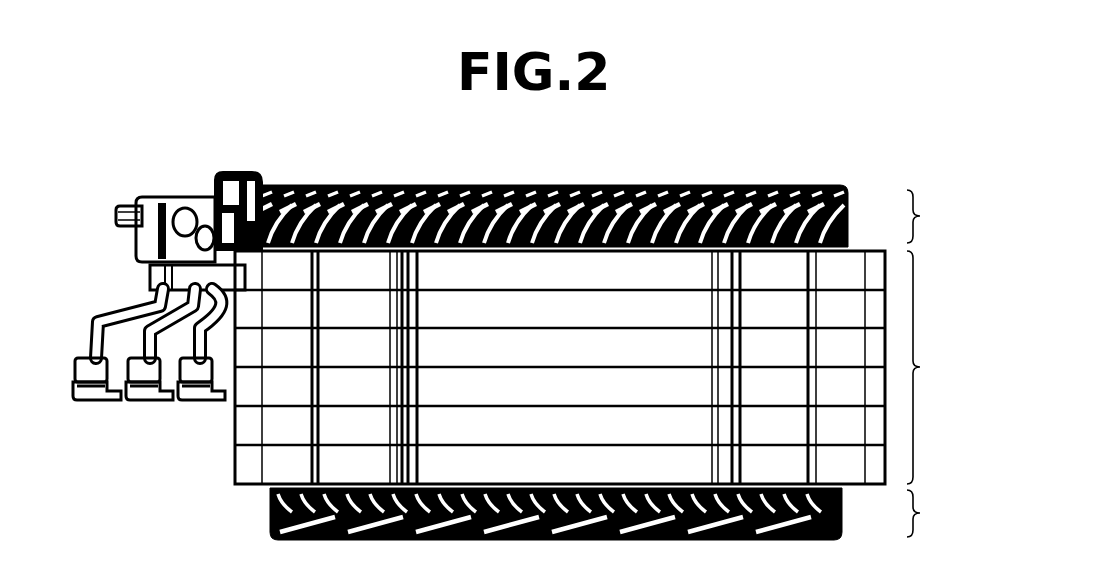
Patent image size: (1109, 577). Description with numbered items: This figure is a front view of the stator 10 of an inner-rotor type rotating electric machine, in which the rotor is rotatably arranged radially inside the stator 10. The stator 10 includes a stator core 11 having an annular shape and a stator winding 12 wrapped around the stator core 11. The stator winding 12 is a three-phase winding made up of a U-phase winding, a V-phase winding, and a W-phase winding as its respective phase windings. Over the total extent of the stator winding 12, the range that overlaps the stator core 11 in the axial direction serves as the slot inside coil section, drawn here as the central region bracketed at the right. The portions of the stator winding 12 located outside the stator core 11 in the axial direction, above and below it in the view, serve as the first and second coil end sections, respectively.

The stator 10 is at (770, 178).
The stator core 11 is at (232, 466).
The stator winding 12 is at (390, 185).